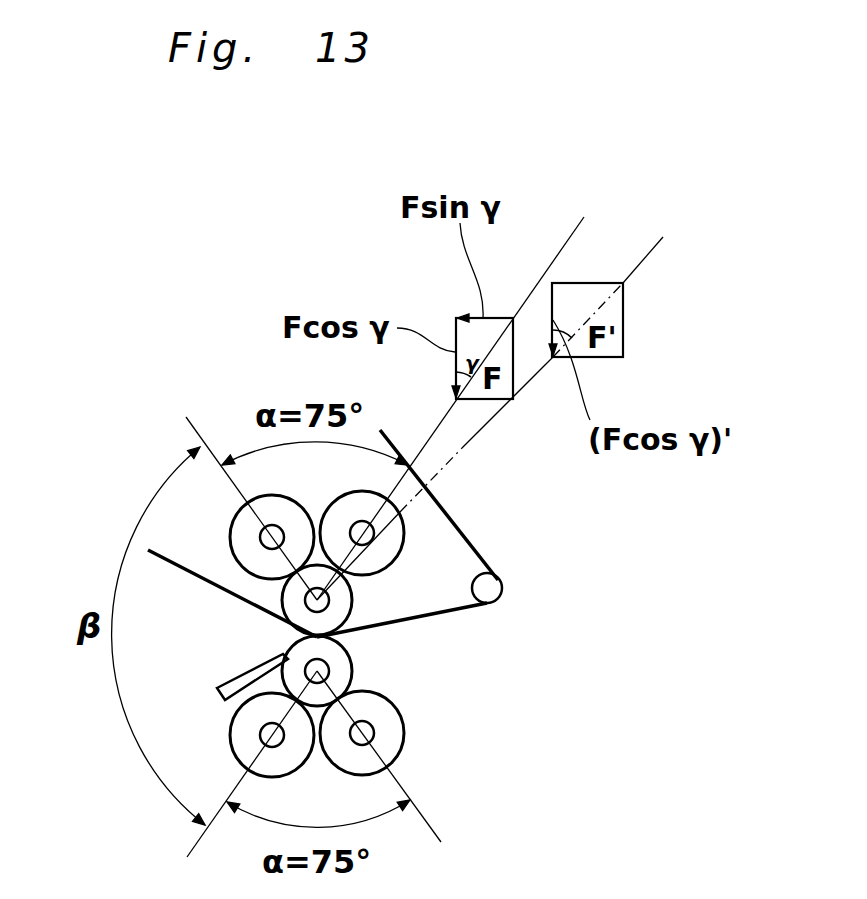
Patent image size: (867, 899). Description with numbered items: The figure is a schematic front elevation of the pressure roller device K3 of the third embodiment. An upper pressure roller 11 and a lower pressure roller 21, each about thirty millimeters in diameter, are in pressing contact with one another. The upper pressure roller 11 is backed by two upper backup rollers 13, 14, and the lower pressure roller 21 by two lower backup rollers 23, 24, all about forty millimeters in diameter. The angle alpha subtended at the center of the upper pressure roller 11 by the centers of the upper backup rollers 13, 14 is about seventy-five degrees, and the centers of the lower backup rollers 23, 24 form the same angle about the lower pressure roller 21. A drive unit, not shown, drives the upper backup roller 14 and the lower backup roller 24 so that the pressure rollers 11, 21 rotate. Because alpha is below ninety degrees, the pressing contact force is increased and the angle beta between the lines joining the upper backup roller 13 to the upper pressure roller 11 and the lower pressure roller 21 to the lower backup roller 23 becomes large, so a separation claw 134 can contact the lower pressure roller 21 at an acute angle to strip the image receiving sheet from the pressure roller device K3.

The upper pressure roller 11 is at (353, 598).
The upper backup roller 13 is at (230, 532).
The upper backup roller 14 is at (403, 538).
The lower pressure roller 21 is at (353, 664).
The lower backup roller 23 is at (230, 735).
The lower backup roller 24 is at (402, 738).
The separation claw 134 is at (222, 688).
The pressure roller device K3 is at (522, 691).